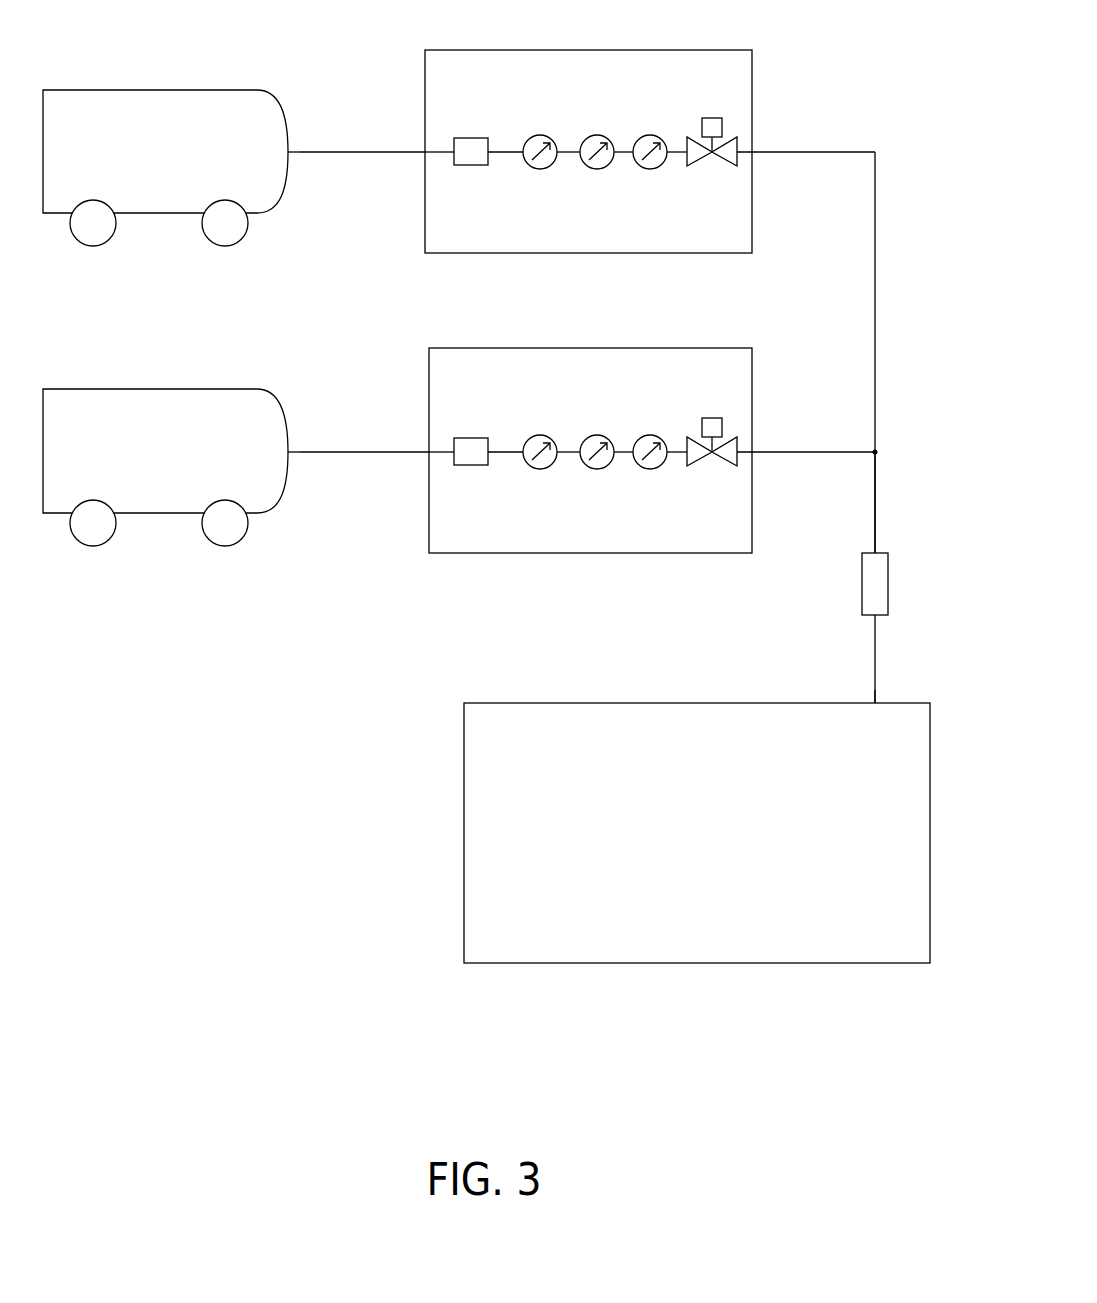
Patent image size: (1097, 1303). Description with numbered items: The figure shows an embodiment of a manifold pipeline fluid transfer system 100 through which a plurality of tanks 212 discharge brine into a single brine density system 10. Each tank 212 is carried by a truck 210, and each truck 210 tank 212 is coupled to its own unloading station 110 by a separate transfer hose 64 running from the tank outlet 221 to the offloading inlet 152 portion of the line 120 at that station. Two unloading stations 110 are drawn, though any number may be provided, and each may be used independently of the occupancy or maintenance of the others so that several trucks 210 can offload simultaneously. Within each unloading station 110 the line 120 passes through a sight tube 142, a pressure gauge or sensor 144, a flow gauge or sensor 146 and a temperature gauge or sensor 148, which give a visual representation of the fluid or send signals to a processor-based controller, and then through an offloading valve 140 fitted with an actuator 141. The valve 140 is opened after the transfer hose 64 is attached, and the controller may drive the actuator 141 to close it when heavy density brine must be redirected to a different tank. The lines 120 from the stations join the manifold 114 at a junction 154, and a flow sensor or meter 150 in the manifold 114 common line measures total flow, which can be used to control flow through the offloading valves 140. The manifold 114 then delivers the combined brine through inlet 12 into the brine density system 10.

The manifold pipeline fluid transfer system 100 is at (886, 92).
The tank 212 is at (131, 100).
The truck 210 is at (147, 214).
The tank outlet 221 is at (293, 148).
The transfer hose 64 is at (352, 150).
The offloading inlet 152 is at (423, 154).
The unloading station 110 is at (641, 255).
The sight tube 142 is at (478, 166).
The pressure gauge or sensor 144 is at (540, 135).
The flow gauge or sensor 146 is at (598, 169).
The temperature gauge or sensor 148 is at (649, 135).
The actuator 141 is at (713, 117).
The offloading valve 140 is at (709, 170).
The line 120 is at (809, 150).
The junction 154 is at (877, 452).
The manifold 114 is at (877, 491).
The flow sensor or meter 150 is at (889, 585).
The inlet 12 is at (873, 700).
The brine density system 10 is at (680, 843).